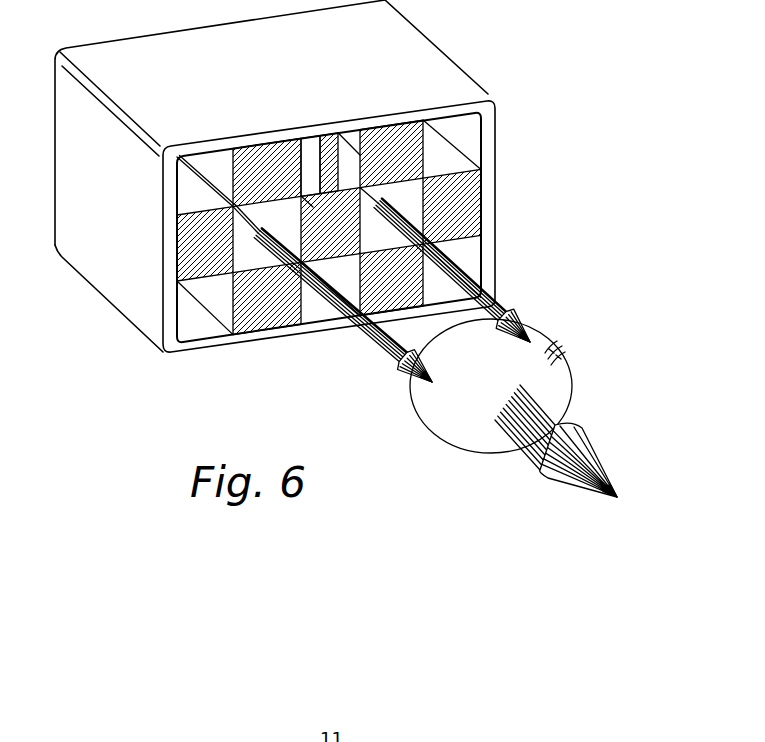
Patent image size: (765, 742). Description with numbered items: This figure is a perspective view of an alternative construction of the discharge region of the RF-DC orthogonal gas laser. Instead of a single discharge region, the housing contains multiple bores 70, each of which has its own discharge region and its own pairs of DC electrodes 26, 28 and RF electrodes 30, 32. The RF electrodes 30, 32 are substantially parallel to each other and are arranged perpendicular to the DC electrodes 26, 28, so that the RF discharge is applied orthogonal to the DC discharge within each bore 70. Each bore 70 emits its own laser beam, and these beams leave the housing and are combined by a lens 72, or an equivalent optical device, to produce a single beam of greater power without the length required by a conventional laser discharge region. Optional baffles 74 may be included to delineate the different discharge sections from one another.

The DC electrode 26 is at (312, 153).
The DC electrode 28 is at (197, 235).
The RF electrode 30 is at (260, 173).
The RF electrode 32 is at (400, 288).
The bore 70 is at (408, 188).
The lens 72 is at (553, 333).
The baffle 74 is at (318, 150).